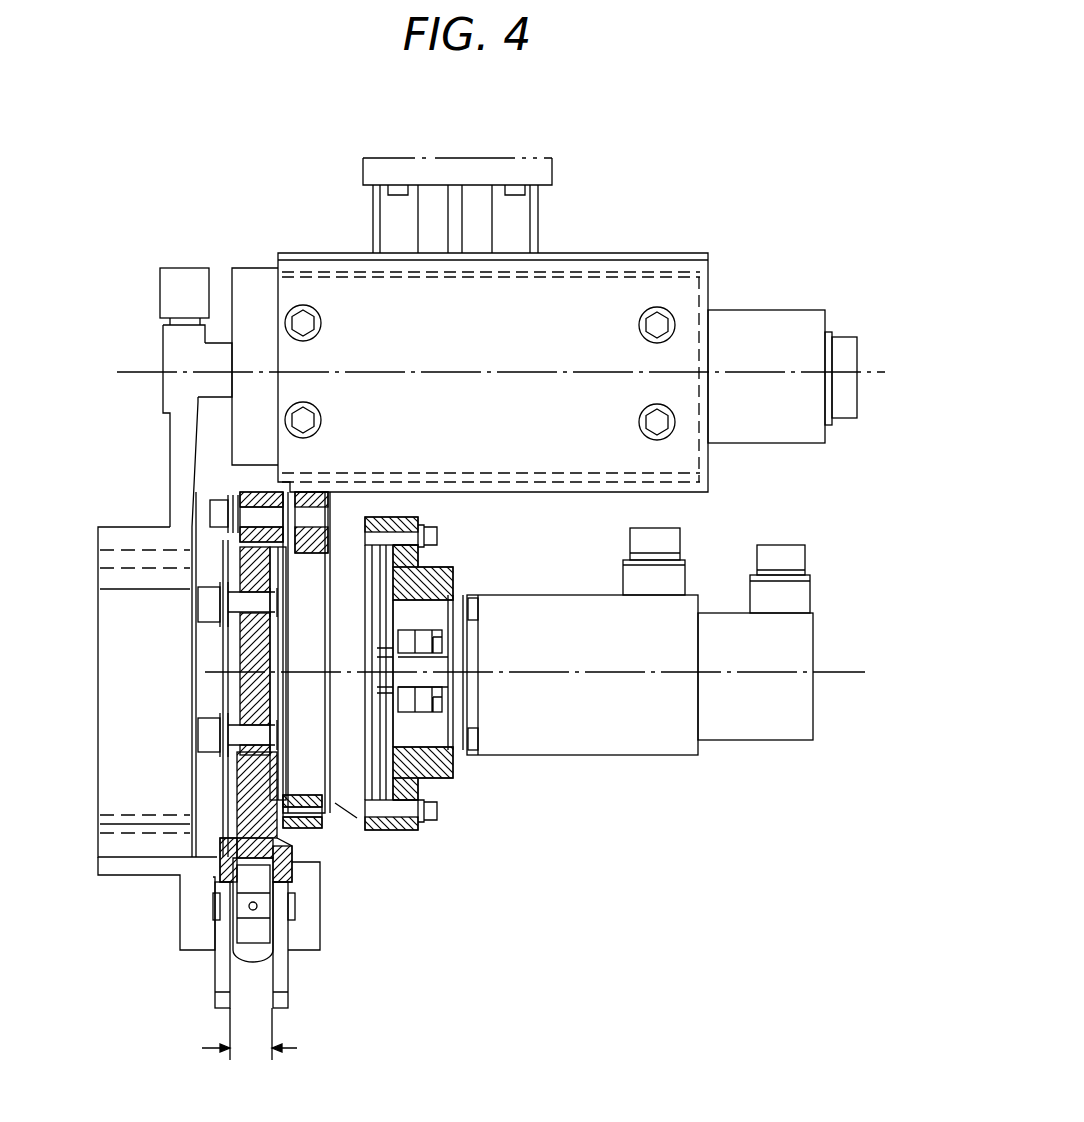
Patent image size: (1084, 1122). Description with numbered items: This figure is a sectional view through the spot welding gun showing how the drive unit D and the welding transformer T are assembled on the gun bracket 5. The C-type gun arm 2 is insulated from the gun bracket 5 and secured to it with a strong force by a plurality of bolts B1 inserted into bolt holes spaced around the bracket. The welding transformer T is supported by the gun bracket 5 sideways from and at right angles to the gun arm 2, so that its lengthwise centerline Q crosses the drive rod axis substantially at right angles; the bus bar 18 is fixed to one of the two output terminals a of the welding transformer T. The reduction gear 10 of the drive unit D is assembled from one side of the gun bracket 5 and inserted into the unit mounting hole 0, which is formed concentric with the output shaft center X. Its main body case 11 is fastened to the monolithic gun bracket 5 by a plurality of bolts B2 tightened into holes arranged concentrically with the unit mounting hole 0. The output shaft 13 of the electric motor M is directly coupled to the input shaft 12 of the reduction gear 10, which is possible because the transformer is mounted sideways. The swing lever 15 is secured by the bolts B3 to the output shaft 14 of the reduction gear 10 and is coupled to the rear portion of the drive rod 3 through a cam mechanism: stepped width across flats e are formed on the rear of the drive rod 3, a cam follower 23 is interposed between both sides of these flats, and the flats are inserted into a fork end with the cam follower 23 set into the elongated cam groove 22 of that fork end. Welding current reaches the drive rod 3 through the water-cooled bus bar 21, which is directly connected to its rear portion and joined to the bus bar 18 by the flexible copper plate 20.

The gun bracket 5 is at (432, 175).
The welding transformer T is at (600, 300).
The centerline of the welding transformer Q is at (870, 372).
The output terminals a is at (205, 355).
The C-type gun arm 2 is at (260, 492).
The bus bar 18 is at (178, 475).
The flexible copper plate 20 is at (125, 670).
The bolts B1 is at (218, 515).
The bolts B3 is at (205, 603).
The swing lever 15 is at (242, 802).
The output shaft of the reduction gear 14 is at (280, 690).
The water-cooled bus bar 21 is at (110, 866).
The drive rod 3 is at (253, 935).
The elongated cam groove 22 is at (222, 1000).
The cam follower 23 is at (222, 968).
The width across flats e is at (249, 1043).
The unit mounting hole 0 is at (313, 555).
The input shaft of the reduction gear 12 is at (395, 590).
The bolts B2 is at (435, 532).
The main body case 11 is at (397, 747).
The output shaft of the electric motor 13 is at (437, 663).
The reduction gear 10 is at (303, 823).
The electric motor M is at (594, 740).
The drive unit D is at (559, 661).
The output shaft center X is at (848, 675).